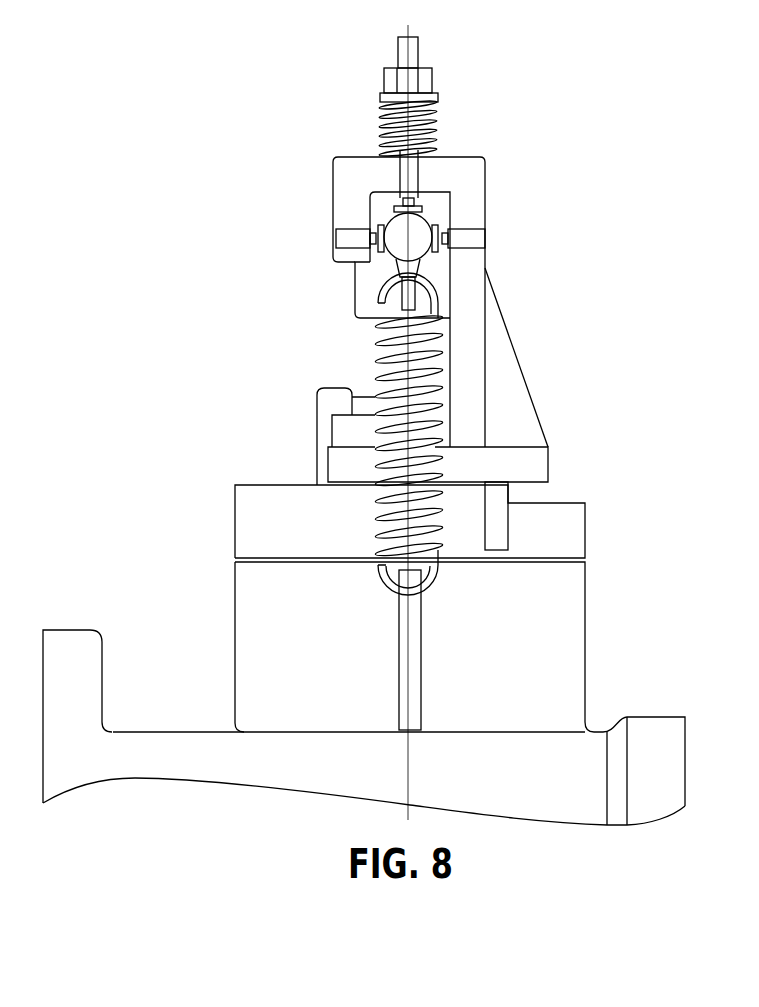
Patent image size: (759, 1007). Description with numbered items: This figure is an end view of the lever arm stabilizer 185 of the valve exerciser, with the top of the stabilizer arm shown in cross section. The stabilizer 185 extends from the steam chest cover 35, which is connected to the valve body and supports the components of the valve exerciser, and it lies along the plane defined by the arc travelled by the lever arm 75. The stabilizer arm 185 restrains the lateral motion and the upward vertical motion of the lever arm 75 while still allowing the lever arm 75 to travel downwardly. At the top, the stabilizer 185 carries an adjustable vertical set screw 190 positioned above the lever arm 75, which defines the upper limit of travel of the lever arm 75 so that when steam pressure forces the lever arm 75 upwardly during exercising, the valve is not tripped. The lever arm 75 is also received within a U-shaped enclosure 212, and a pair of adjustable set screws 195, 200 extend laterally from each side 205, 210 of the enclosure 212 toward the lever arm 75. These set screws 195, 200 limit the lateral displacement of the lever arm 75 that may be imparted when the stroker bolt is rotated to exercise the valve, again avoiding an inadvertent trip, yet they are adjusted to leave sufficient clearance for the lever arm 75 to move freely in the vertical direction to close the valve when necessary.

The lever arm stabilizer 185 is at (445, 167).
The adjustable vertical set screw 190 is at (397, 183).
The side of U-shaped enclosure 205 is at (344, 208).
The U-shaped enclosure 212 is at (460, 172).
The lever arm 75 is at (423, 228).
The adjustable set screw 195 is at (347, 239).
The adjustable set screw 200 is at (450, 238).
The side of U-shaped enclosure 210 is at (462, 292).
The steam chest cover 35 is at (562, 528).